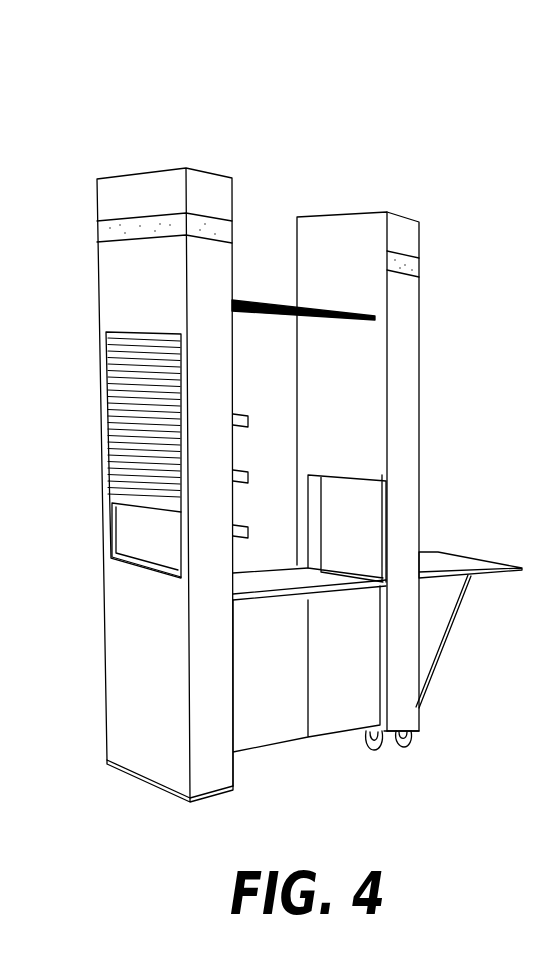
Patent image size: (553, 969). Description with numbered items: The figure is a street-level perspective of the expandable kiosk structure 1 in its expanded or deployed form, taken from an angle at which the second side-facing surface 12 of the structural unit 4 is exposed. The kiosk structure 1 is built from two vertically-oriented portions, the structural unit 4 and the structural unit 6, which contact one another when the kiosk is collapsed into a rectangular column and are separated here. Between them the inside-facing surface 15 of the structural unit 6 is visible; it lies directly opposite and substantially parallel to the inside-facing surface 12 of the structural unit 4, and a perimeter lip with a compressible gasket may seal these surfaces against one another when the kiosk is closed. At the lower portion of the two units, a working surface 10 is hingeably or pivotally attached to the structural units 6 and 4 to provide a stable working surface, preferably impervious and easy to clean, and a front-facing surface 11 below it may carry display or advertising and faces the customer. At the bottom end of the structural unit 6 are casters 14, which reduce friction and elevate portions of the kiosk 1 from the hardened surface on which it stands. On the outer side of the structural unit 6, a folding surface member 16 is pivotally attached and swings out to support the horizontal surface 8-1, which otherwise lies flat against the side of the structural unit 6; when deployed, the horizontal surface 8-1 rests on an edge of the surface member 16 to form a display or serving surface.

The kiosk structure 1 is at (95, 74).
The structural unit 4 is at (201, 141).
The structural unit 6 is at (405, 186).
The horizontal surface 8-1 is at (480, 551).
The working surface 10 is at (282, 556).
The front-facing surface 11 is at (289, 720).
The second side-facing surface 12 is at (127, 710).
The casters 14 is at (408, 748).
The inside-facing surface 15 is at (365, 428).
The folding surface member 16 is at (448, 633).